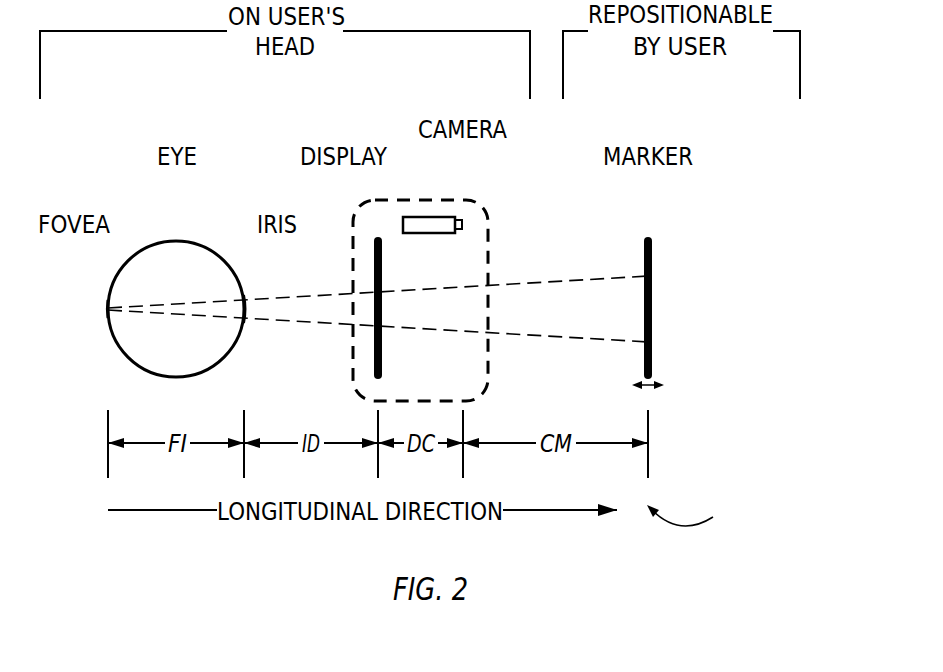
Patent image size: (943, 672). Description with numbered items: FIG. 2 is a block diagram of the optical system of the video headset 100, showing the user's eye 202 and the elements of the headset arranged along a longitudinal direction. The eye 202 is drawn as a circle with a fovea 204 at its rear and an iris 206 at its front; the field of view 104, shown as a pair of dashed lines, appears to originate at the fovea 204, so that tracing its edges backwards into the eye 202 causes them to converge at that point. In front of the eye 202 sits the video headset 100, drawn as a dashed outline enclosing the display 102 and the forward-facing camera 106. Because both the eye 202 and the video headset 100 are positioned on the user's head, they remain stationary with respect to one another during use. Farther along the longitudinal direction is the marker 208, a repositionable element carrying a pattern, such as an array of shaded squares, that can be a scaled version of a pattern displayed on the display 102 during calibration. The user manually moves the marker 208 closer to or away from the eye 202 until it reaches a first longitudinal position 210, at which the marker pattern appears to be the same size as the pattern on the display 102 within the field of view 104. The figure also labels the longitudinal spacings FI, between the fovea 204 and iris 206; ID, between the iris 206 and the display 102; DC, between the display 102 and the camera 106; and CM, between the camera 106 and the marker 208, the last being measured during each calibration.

The video headset 100 is at (490, 242).
The display 102 is at (378, 238).
The field of view 104 is at (325, 295).
The forward-facing camera 106 is at (430, 217).
The eye 202 is at (177, 241).
The fovea 204 is at (108, 308).
The iris 206 is at (244, 302).
The marker 208 is at (650, 238).
The first longitudinal position 210 is at (689, 505).